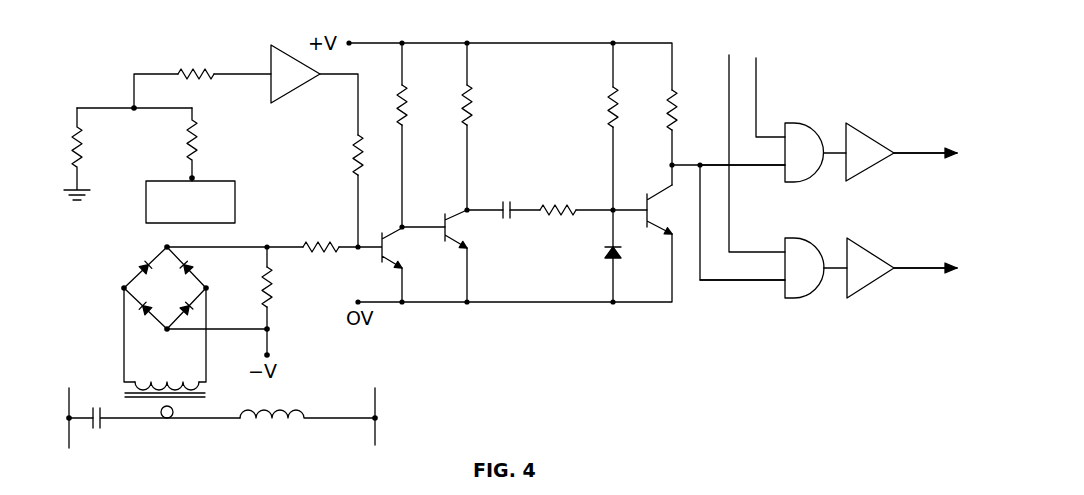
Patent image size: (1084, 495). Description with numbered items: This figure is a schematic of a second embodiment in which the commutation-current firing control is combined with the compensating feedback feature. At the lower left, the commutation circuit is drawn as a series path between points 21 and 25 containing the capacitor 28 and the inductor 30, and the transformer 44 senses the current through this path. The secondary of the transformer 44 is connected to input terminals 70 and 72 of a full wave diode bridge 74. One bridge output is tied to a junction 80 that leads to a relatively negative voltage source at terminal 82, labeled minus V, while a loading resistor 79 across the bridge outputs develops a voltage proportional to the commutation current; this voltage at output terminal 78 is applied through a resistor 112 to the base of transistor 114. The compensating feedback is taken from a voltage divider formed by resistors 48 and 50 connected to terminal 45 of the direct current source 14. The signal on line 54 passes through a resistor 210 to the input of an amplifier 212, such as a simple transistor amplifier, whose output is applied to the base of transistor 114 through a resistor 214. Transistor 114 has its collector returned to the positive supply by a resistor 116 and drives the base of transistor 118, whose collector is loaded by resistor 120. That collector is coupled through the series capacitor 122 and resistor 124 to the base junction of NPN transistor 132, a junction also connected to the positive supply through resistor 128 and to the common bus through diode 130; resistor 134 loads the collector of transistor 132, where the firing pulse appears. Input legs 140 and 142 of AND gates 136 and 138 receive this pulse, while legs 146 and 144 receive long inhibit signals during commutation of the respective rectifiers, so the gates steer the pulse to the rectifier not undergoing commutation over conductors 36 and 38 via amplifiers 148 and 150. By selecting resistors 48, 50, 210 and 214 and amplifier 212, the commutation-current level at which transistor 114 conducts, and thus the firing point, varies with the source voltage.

The direct current source 14 is at (146, 203).
The input terminal 21 is at (73, 424).
The input terminal 25 is at (375, 417).
The capacitor 28 is at (105, 426).
The inductor 30 is at (284, 426).
The conductor 36 is at (924, 150).
The conductor 38 is at (936, 267).
The transformer 44 is at (122, 384).
The terminal 45 is at (197, 176).
The resistor 48 is at (198, 144).
The resistor 50 is at (85, 152).
The line 54 is at (134, 81).
The input terminal 70 is at (124, 288).
The input terminal 72 is at (206, 288).
The full wave diode bridge 74 is at (178, 296).
The output terminal 78 is at (167, 247).
The loading resistor 79 is at (275, 289).
The junction 80 is at (268, 329).
The terminal 82 is at (270, 356).
The resistor 112 is at (338, 234).
The transistor 114 is at (400, 260).
The resistor 116 is at (408, 100).
The transistor 118 is at (458, 230).
The resistor 120 is at (476, 88).
The capacitor 122 is at (507, 197).
The resistor 124 is at (566, 194).
The resistor 128 is at (595, 118).
The diode 130 is at (606, 260).
The NPN transistor 132 is at (656, 218).
The resistor 134 is at (655, 98).
The AND gate 136 is at (808, 122).
The AND gate 138 is at (815, 237).
The input leg 140 is at (766, 166).
The input leg 142 is at (724, 282).
The input leg 144 is at (730, 54).
The input leg 146 is at (761, 73).
The amplifier 148 is at (875, 132).
The amplifier 150 is at (888, 255).
The resistor 210 is at (200, 58).
The amplifier 212 is at (295, 96).
The resistor 214 is at (347, 160).